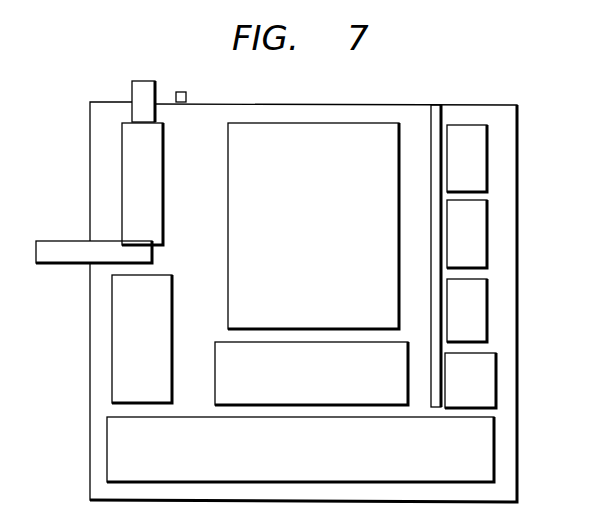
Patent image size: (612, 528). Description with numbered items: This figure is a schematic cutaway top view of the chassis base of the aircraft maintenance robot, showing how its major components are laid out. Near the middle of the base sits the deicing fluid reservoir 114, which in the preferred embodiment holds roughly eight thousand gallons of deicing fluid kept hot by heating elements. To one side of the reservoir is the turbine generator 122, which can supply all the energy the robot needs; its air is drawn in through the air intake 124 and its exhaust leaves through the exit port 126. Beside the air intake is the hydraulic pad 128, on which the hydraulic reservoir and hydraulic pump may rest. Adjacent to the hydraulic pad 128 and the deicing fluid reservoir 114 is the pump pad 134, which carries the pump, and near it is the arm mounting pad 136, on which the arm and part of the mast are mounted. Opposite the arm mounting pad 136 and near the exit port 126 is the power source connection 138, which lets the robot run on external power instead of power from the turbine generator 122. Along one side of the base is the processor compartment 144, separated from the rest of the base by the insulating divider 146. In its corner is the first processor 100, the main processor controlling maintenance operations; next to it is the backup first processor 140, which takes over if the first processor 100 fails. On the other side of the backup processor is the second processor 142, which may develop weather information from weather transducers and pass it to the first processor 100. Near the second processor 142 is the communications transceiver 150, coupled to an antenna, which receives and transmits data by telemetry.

The first processor 100 is at (490, 172).
The deicing fluid reservoir 114 is at (329, 124).
The turbine generator 122 is at (120, 163).
The air intake 124 is at (60, 240).
The exit port 126 is at (143, 80).
The hydraulic pad 128 is at (111, 339).
The pump pad 134 is at (222, 340).
The arm mounting pad 136 is at (107, 446).
The power source connection 138 is at (180, 92).
The backup first processor 140 is at (490, 248).
The second processor 142 is at (490, 322).
The processor compartment 144 is at (497, 116).
The insulating divider 146 is at (434, 105).
The communications transceiver 150 is at (498, 389).